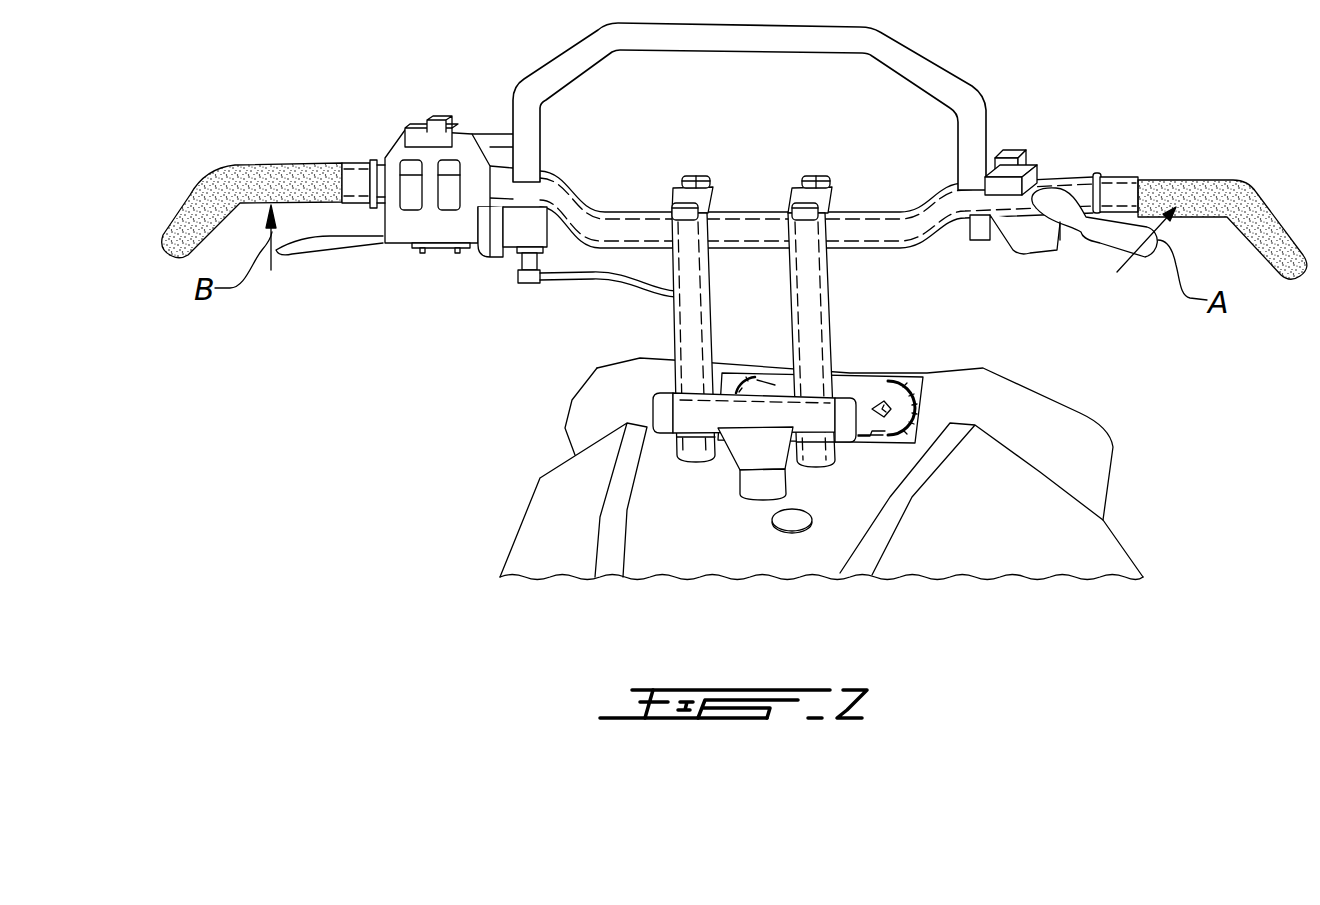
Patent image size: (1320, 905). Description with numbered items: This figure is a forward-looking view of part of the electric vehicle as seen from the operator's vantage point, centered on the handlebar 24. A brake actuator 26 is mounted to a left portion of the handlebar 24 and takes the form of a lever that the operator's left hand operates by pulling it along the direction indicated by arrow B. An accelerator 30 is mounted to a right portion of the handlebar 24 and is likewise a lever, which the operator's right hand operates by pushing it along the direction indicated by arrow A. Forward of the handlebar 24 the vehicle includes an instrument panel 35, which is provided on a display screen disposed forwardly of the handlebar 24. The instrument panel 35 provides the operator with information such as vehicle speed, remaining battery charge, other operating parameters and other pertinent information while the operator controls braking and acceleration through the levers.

The handlebar 24 is at (930, 222).
The brake actuator 26 is at (342, 238).
The accelerator 30 is at (1103, 238).
The instrument panel 35 is at (890, 422).